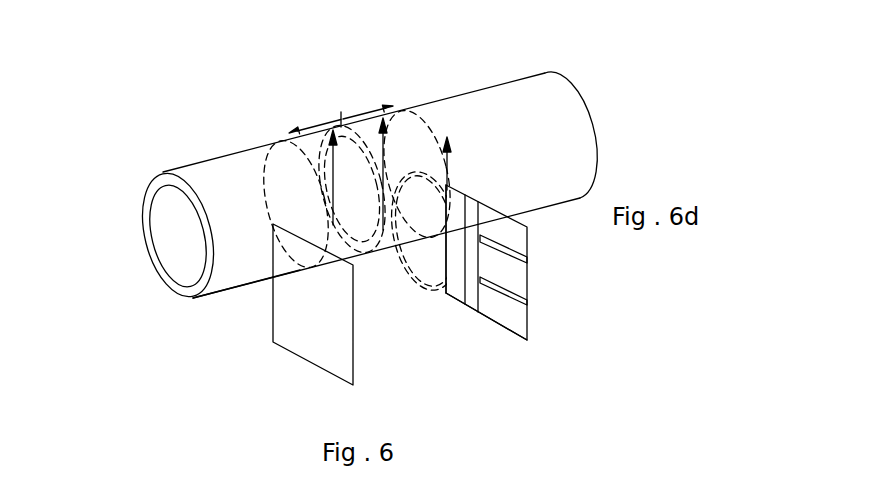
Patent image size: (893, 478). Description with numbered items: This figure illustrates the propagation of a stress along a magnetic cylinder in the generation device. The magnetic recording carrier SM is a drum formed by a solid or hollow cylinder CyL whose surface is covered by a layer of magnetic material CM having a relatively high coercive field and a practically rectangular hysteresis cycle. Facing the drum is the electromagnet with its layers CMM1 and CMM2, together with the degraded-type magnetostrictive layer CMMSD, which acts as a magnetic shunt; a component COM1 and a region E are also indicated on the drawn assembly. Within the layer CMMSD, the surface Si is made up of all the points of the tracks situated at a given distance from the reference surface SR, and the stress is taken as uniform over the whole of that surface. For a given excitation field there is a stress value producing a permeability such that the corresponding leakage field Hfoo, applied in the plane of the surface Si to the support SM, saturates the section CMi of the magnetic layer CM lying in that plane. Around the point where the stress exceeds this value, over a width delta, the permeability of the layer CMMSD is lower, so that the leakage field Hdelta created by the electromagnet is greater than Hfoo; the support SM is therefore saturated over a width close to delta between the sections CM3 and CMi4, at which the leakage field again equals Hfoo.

The magnetic recording carrier SM is at (157, 200).
The layer of magnetic material CM is at (151, 248).
The cylinder CyL is at (157, 270).
The section of the magnetic layer CM3 is at (283, 141).
The section of the magnetic layer CMi is at (341, 120).
The width of saturation delta is at (341, 117).
The section of the magnetic layer CMi4 is at (401, 109).
The leakage field Hfoo is at (412, 177).
The leakage field Hdelta is at (389, 174).
The elliptical region E is at (438, 243).
The surface Si is at (473, 241).
The layer CMM1 is at (520, 199).
The component COM1 is at (528, 283).
The layer CMM2 is at (528, 339).
The degraded-type magnetostrictive layer CMMSD is at (444, 292).
The reference surface SR is at (290, 343).